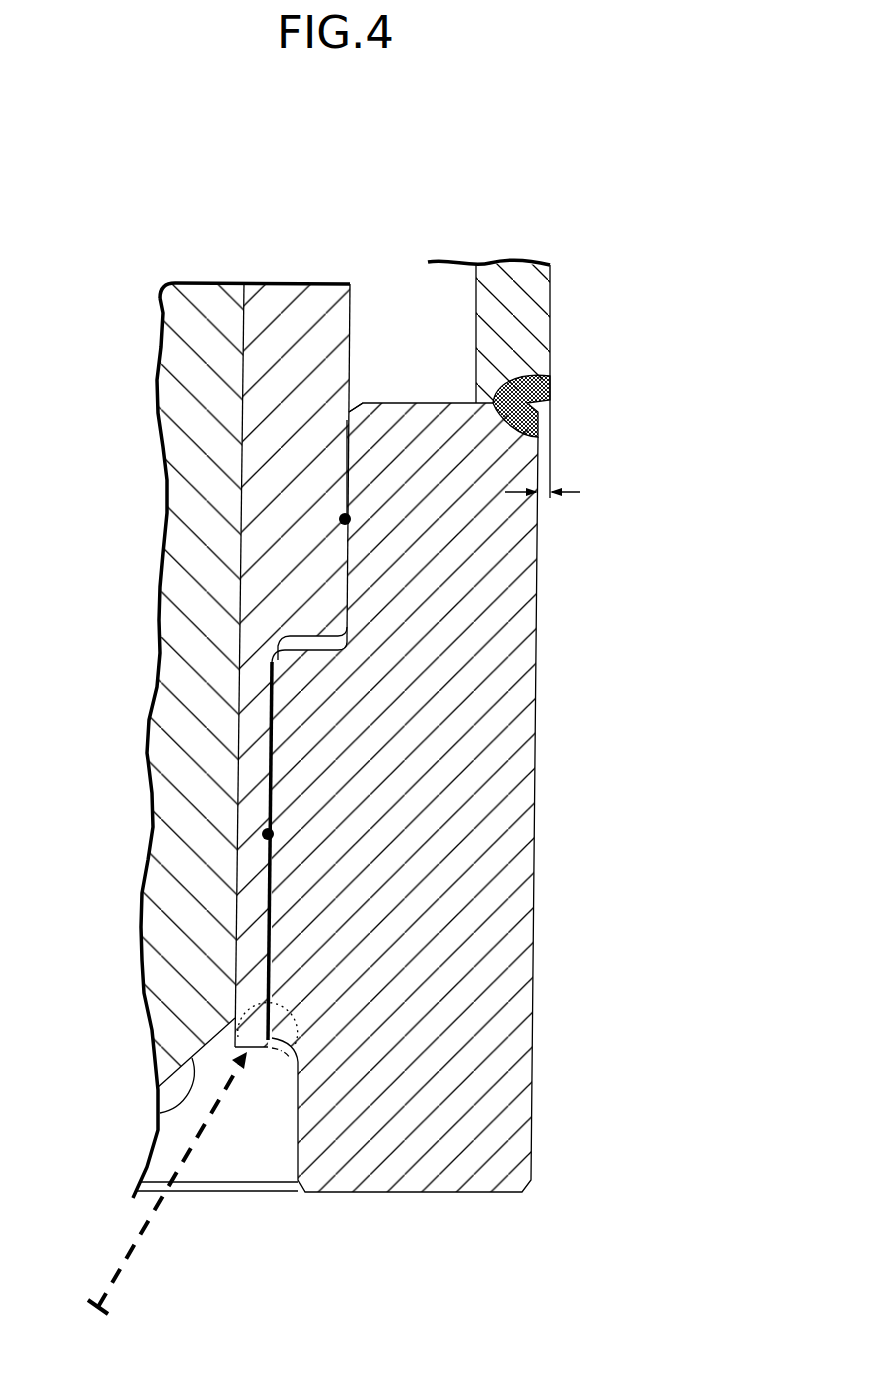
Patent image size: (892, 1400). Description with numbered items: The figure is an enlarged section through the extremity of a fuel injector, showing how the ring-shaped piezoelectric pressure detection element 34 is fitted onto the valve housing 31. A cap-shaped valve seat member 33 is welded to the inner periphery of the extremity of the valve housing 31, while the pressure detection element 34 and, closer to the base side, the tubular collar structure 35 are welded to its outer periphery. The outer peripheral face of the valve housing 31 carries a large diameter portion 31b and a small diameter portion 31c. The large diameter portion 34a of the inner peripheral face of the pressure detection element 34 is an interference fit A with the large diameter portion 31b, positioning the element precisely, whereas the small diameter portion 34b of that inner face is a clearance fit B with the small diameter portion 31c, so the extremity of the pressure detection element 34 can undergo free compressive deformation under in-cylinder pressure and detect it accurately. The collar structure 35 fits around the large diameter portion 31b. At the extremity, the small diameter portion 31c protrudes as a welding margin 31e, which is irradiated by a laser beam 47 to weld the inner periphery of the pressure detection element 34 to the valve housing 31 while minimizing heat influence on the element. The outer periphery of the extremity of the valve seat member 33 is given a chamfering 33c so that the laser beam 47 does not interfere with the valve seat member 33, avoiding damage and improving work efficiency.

The valve housing 31 is at (280, 272).
The large diameter portion 31b is at (350, 462).
The small diameter portion 31c is at (268, 731).
The welding margin 31e is at (250, 1042).
The valve seat member 33 is at (184, 272).
The chamfering 33c is at (160, 1112).
The pressure detection element 34 is at (550, 628).
The large diameter portion 34a is at (347, 477).
The small diameter portion 34b is at (268, 781).
The collar structure 35 is at (536, 317).
The laser beam 47 is at (142, 1238).
The interference fit A is at (345, 519).
The clearance fit B is at (268, 834).